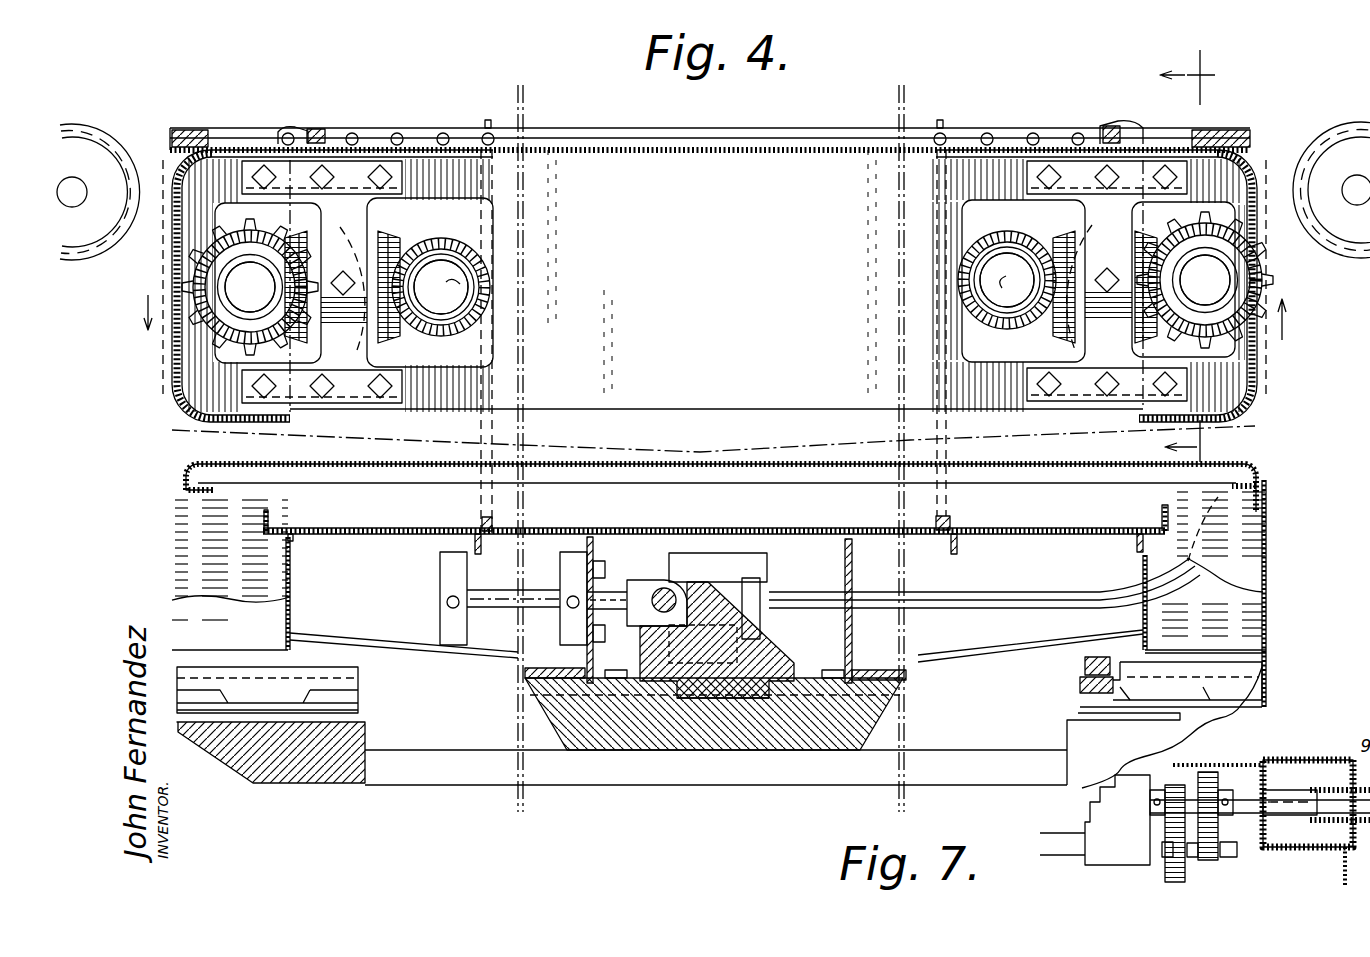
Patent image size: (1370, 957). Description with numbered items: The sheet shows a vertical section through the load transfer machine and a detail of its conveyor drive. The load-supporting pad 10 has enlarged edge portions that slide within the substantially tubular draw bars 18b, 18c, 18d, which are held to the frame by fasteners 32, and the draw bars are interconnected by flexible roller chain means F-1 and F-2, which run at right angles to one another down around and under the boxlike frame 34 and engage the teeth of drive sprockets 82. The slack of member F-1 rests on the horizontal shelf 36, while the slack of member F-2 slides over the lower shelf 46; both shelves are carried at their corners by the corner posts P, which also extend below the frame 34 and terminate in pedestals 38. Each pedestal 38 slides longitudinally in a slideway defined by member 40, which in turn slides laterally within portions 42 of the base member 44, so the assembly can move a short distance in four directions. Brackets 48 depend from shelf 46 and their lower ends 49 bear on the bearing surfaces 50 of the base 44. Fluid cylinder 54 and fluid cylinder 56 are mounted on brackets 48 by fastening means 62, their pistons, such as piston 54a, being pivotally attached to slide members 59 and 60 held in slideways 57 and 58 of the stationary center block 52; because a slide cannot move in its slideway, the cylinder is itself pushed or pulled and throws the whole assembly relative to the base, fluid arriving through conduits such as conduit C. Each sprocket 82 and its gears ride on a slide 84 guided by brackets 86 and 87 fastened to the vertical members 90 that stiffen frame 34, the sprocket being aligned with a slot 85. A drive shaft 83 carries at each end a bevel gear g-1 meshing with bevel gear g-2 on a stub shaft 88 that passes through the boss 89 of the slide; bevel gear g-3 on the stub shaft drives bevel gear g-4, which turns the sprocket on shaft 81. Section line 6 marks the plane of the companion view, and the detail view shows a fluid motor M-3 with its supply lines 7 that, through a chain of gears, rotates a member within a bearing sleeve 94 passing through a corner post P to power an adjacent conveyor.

In FIG. 4, the load-supporting pad 10 is at (435, 116).
In FIG. 4, the draw bar 18b is at (745, 133).
In FIG. 4, the draw bar 18c is at (326, 133).
In FIG. 4, the draw bar 18d is at (1108, 126).
In FIG. 4, the fastener block 32 is at (318, 126).
In FIG. 4, the boxlike frame 34 is at (182, 413).
In FIG. 4, the horizontal shelf 36 is at (722, 530).
In FIG. 4, the pedestal 38 is at (345, 657).
In FIG. 4, the slideway defining member 40 is at (358, 689).
In FIG. 4, the base slideway portion 42 is at (256, 730).
In FIG. 4, the base member 44 is at (468, 773).
In FIG. 4, the horizontal shelf member 46 is at (648, 463).
In FIG. 4, the bracket 48 is at (592, 543).
In FIG. 4, the bearing lower end 49 is at (570, 675).
In FIG. 4, the bearing surface 50 is at (604, 680).
In FIG. 4, the center block 52 is at (662, 740).
In FIG. 4, the fluid cylinder 54 is at (446, 576).
In FIG. 4, the piston 54a is at (607, 594).
In FIG. 4, the fluid cylinder 56 is at (760, 558).
In FIG. 4, the slideway 57 is at (741, 706).
In FIG. 4, the slideway 58 is at (813, 705).
In FIG. 4, the slide member 59 is at (762, 641).
In FIG. 4, the slide member 60 is at (762, 588).
In FIG. 4, the screw 62 is at (701, 578).
In FIG. 4, the shaft 81 is at (252, 265).
In FIG. 4, the drive sprocket 82 is at (205, 249).
In FIG. 4, the drive shaft 83 is at (458, 286).
In FIG. 4, the slide 84 is at (232, 204).
In FIG. 4, the slot 85 is at (172, 342).
In FIG. 4, the slideway bracket 86 is at (362, 166).
In FIG. 4, the slideway bracket 87 is at (360, 402).
In FIG. 4, the stub shaft 88 is at (368, 271).
In FIG. 4, the boss 89 is at (352, 316).
In FIG. 4, the vertical member 90 is at (195, 168).
In FIG. 7, the bearing sleeve 94 is at (1283, 788).
In FIG. 4, the corner post P is at (186, 127).
In FIG. 7, the corner post P is at (1325, 760).
In FIG. 4, the conduit C is at (445, 602).
In FIG. 4, the flexible roller chain means F-1 is at (480, 527).
In FIG. 4, the flexible roller chain means F-2 is at (166, 362).
In FIG. 4, the bevel gear g-1 is at (478, 316).
In FIG. 4, the bevel gear g-2 is at (396, 326).
In FIG. 4, the bevel gear g-3 is at (306, 336).
In FIG. 4, the bevel gear g-4 is at (205, 313).
In FIG. 7, the fluid motor M-3 is at (1108, 857).
In FIG. 4, the section line 6 is at (1176, 256).
In FIG. 7, the wires 7 is at (1048, 848).